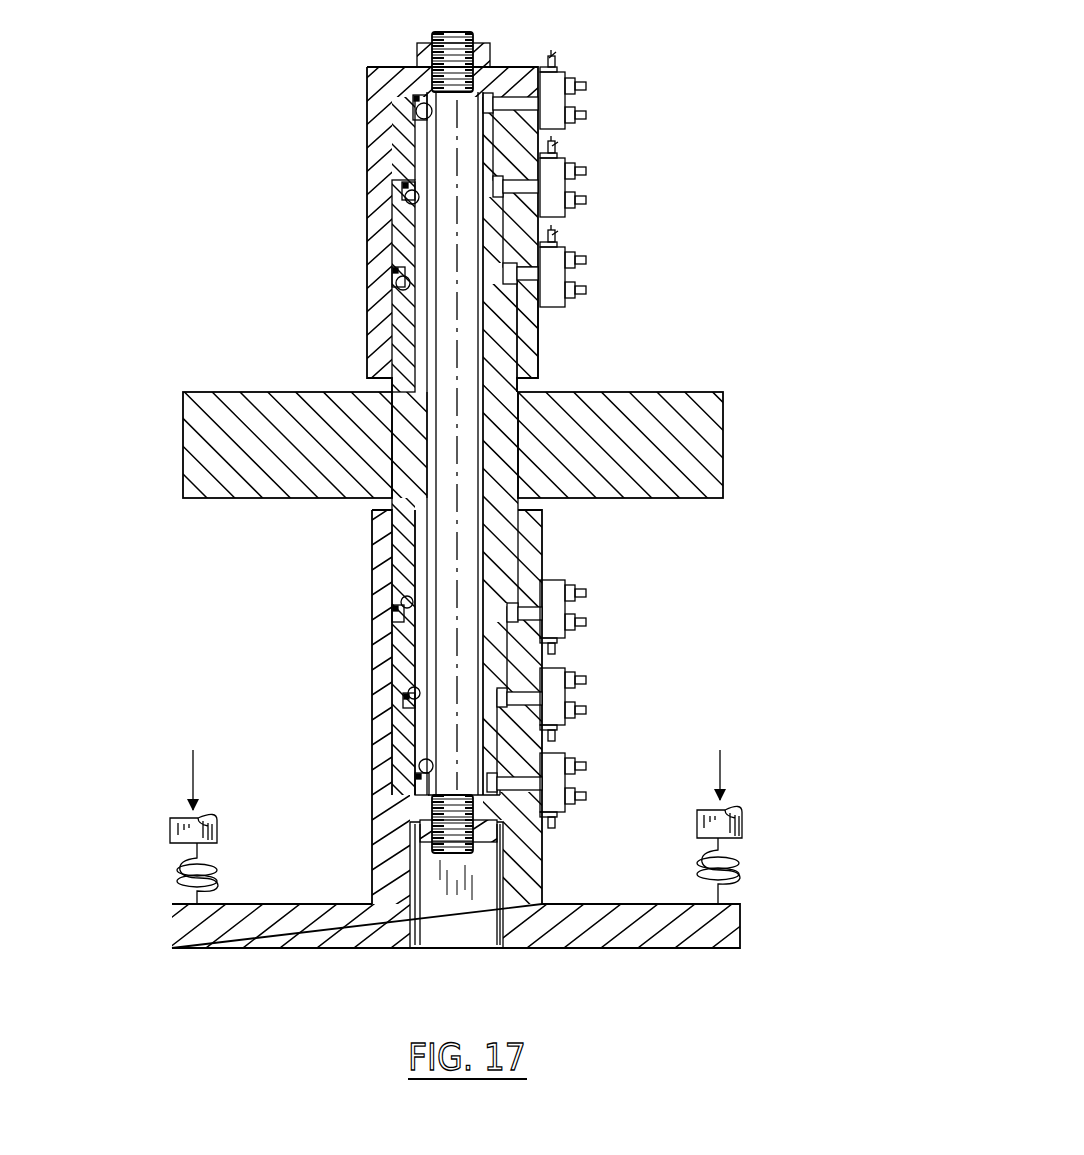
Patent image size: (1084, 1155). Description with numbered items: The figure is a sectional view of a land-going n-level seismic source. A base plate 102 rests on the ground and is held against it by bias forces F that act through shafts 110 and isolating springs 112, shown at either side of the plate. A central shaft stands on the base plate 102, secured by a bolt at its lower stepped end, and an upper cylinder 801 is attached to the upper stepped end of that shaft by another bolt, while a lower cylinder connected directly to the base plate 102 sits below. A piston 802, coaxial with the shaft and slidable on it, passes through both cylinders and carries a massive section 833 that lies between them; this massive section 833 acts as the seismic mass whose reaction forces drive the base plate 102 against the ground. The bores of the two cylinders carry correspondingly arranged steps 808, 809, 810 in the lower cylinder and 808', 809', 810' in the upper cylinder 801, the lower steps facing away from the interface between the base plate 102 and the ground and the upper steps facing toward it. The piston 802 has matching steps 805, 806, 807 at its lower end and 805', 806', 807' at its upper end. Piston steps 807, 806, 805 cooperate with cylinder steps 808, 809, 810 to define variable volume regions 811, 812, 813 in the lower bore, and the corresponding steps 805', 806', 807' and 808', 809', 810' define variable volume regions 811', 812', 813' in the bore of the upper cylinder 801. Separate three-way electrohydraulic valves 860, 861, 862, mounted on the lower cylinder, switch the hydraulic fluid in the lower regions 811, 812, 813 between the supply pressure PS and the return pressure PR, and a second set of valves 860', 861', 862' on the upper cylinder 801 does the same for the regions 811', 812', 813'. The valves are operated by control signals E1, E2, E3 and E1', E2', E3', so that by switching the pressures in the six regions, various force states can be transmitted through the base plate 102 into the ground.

The base plate 102 is at (536, 950).
The shafts 110 is at (175, 837).
The springs 112 is at (178, 881).
The upper cylinder 801 is at (369, 72).
The piston 802 is at (504, 358).
The massive section 833 is at (723, 392).
The piston step 805 is at (428, 729).
The piston step 805' is at (366, 286).
The piston step 806 is at (368, 656).
The piston step 806' is at (358, 235).
The piston step 807 is at (371, 741).
The piston step 807' is at (356, 150).
The bore step 808 is at (376, 791).
The bore step 808' is at (354, 111).
The bore step 809 is at (368, 709).
The bore step 809' is at (351, 202).
The bore step 810 is at (360, 610).
The bore step 810' is at (356, 284).
The variable volume region 811 is at (376, 770).
The variable volume region 811' is at (371, 125).
The variable volume region 812 is at (371, 689).
The variable volume region 812' is at (352, 218).
The variable volume region 813 is at (365, 591).
The variable volume region 813' is at (348, 304).
The three-way electrohydraulic valve 860 is at (590, 802).
The three-way electrohydraulic valve 860' is at (602, 86).
The three-way electrohydraulic valve 861 is at (607, 709).
The three-way electrohydraulic valve 861' is at (609, 176).
The three-way electrohydraulic valve 862 is at (597, 603).
The three-way electrohydraulic valve 862' is at (609, 266).
The control signal E1 is at (567, 847).
The control signal E2 is at (573, 745).
The control signal E3 is at (577, 661).
The control signal E1' is at (569, 40).
The control signal E2' is at (574, 141).
The control signal E3' is at (573, 228).
The supply pressure port PS is at (602, 449).
The return pressure port PR is at (604, 447).
The bias forces F is at (200, 722).